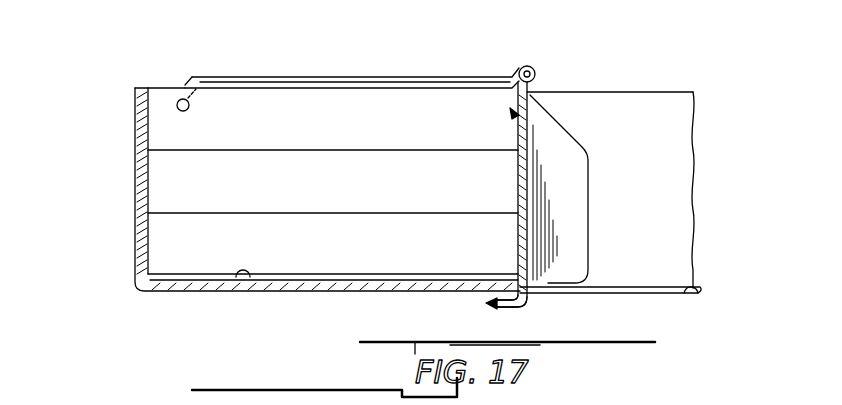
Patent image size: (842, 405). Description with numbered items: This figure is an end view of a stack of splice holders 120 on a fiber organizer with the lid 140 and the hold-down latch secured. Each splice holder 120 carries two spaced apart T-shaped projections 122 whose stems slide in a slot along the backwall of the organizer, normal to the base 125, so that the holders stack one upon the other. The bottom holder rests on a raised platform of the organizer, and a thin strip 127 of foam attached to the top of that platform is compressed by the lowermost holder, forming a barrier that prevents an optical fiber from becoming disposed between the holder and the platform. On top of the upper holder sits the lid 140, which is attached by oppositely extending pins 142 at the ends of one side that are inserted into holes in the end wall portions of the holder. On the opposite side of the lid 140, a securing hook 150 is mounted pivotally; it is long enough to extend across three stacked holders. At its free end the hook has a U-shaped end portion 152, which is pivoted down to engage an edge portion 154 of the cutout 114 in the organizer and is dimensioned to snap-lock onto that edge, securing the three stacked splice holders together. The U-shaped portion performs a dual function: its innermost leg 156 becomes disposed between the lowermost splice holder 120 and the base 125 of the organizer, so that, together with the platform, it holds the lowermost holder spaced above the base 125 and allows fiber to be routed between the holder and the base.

The cutout 114 is at (664, 288).
The splice holder 120 is at (156, 125).
The T-shaped projection 122 is at (136, 105).
The base 125 is at (700, 292).
The strip 127 is at (239, 280).
The lid 140 is at (397, 77).
The pin 142 is at (183, 99).
The securing hook 150 is at (493, 300).
The U-shaped end portion 152 is at (496, 305).
The edge portion 154 is at (465, 284).
The innermost leg 156 is at (516, 268).